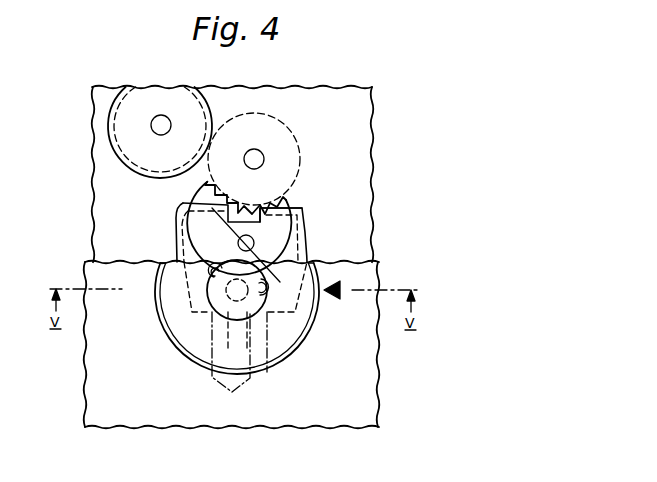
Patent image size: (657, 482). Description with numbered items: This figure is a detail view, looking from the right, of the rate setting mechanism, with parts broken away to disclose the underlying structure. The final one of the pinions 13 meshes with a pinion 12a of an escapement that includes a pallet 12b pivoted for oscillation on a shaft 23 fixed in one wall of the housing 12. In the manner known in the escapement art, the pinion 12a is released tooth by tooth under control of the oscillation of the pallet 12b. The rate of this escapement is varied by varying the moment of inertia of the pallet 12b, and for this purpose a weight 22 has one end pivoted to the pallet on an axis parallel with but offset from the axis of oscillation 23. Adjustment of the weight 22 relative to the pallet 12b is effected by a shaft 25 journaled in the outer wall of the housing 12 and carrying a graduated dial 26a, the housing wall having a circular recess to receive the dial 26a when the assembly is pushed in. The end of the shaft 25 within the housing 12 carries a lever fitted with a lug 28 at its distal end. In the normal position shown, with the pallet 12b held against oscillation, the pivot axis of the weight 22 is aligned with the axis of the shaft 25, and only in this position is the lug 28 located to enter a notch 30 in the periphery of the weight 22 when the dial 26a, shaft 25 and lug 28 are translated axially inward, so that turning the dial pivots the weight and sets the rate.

The housing 12 is at (358, 273).
The pinion 12a is at (284, 154).
The pallet 12b is at (292, 222).
The pinions 13 is at (133, 133).
The weight 22 is at (177, 228).
The shaft 23 is at (254, 244).
The shaft 25 is at (237, 293).
The graduated dial 26a is at (183, 343).
The lug 28 is at (266, 294).
The notch 30 is at (214, 270).